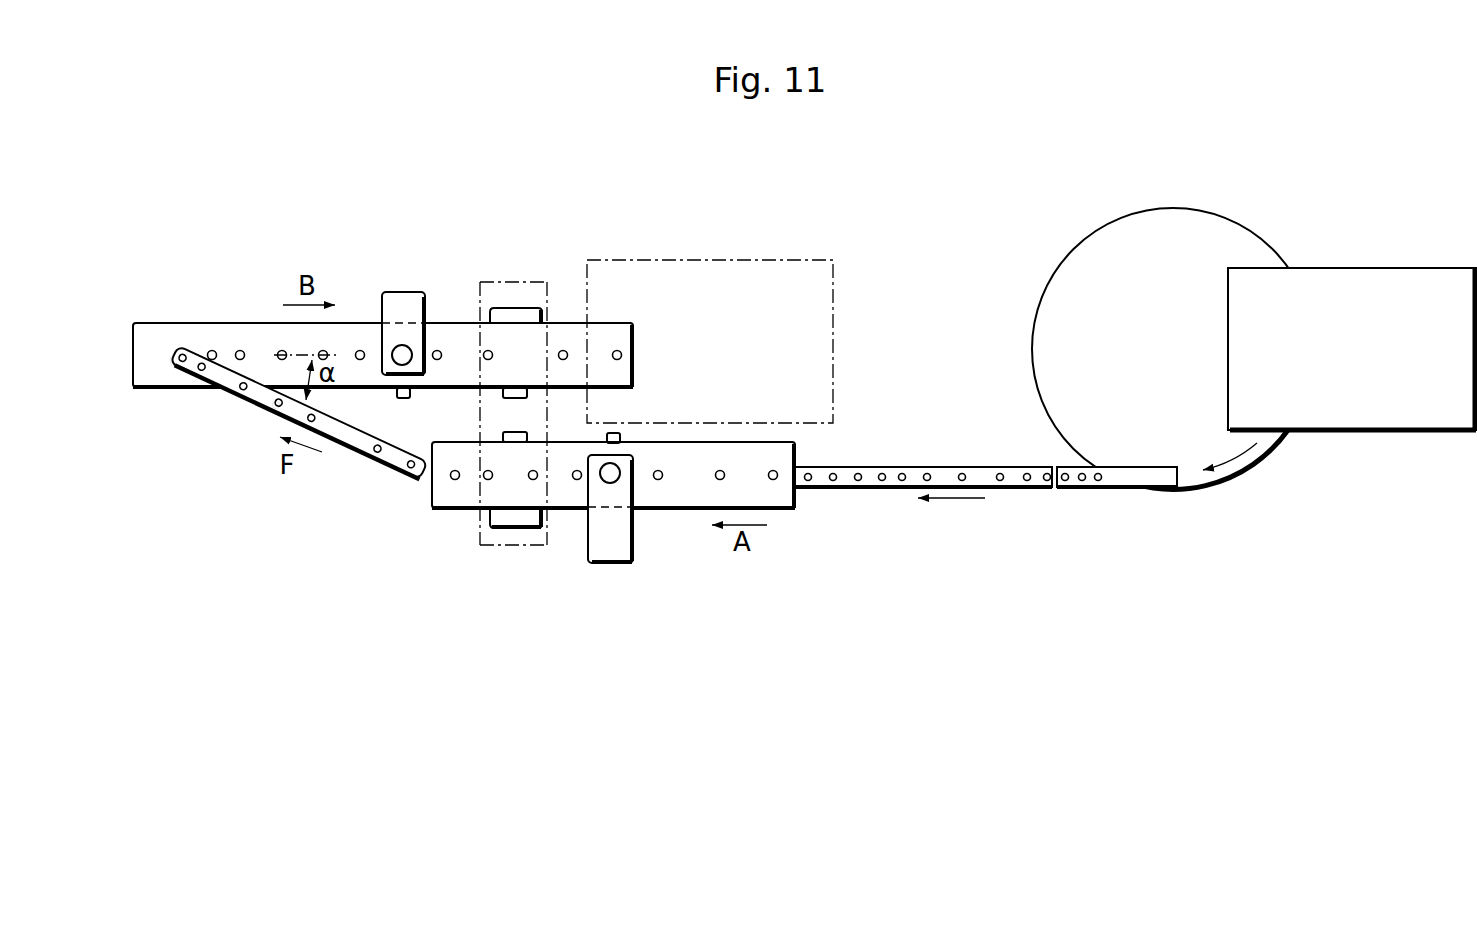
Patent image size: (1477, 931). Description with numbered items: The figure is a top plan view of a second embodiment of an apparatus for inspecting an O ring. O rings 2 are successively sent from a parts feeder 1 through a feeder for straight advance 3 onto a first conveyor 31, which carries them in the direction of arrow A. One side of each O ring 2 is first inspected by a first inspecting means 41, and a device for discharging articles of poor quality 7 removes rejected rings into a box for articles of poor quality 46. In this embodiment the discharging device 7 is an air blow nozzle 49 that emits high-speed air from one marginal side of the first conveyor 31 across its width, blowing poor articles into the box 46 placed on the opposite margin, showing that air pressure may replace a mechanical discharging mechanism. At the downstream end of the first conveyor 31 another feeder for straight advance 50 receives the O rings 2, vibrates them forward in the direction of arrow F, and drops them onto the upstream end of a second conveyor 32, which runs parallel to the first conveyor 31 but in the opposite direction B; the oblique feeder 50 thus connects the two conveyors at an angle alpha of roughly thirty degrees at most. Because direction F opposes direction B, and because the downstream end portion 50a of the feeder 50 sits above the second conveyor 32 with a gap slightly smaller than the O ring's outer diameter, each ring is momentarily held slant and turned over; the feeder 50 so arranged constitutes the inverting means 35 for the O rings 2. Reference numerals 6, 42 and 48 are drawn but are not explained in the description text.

The parts feeder 1 is at (1212, 200).
The O rings 2 is at (437, 349).
The feeder for straight advance 3 is at (896, 490).
The stop 6 is at (397, 397).
The device for discharging articles of poor quality 7 is at (517, 398).
The first conveyor 31 is at (693, 510).
The second conveyor 32 is at (363, 318).
The inverting means 35 is at (194, 382).
The first inspecting means 41 is at (612, 567).
The upper clamping block 42 is at (403, 286).
The box for articles of poor quality 46 is at (531, 307).
The processing station 48 is at (722, 280).
The air blow nozzle 49 is at (514, 398).
The feeder for straight advance 50 is at (374, 462).
The downstream end portion 50a is at (200, 347).